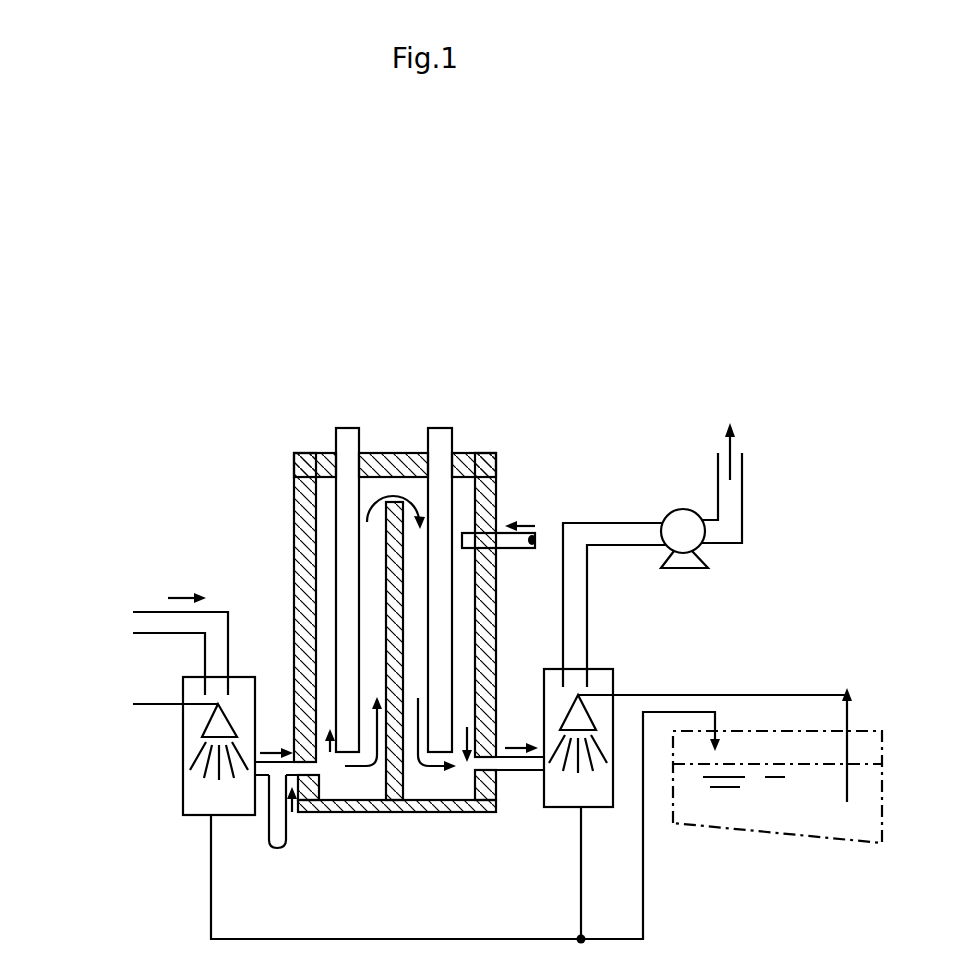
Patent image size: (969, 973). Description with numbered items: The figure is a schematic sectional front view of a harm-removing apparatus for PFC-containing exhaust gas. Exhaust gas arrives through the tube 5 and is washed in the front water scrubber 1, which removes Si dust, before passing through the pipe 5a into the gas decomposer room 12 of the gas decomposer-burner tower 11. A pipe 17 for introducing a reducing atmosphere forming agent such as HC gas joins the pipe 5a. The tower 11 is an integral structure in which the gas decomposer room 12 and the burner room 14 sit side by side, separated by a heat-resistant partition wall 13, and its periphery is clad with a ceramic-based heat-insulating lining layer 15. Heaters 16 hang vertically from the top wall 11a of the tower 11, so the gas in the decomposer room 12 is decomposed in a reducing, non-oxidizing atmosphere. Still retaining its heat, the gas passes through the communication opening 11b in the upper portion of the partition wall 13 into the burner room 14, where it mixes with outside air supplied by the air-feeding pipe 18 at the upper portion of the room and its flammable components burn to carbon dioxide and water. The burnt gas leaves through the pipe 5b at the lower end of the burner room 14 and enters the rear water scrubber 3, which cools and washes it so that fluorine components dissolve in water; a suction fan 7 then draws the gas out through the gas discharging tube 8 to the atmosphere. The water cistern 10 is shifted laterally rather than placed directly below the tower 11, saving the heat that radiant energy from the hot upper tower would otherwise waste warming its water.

The front water scrubber 1 is at (245, 690).
The rear water scrubber 3 is at (602, 682).
The tube 5 is at (175, 625).
The pipe 5a is at (273, 770).
The pipe 5b is at (515, 768).
The suction fan 7 is at (678, 528).
The gas discharging tube 8 is at (734, 496).
The water cistern 10 is at (775, 837).
The gas decomposer-burner tower 11 is at (378, 636).
The top wall 11a is at (385, 463).
The communication opening 11b is at (393, 483).
The gas decomposer room 12 is at (353, 790).
The partition wall 13 is at (402, 790).
The burner room 14 is at (453, 785).
The heat-insulating lining layer 15 is at (492, 505).
The heaters 16 is at (439, 500).
The pipe 17 is at (278, 803).
The air-feeding pipe 18 is at (498, 552).